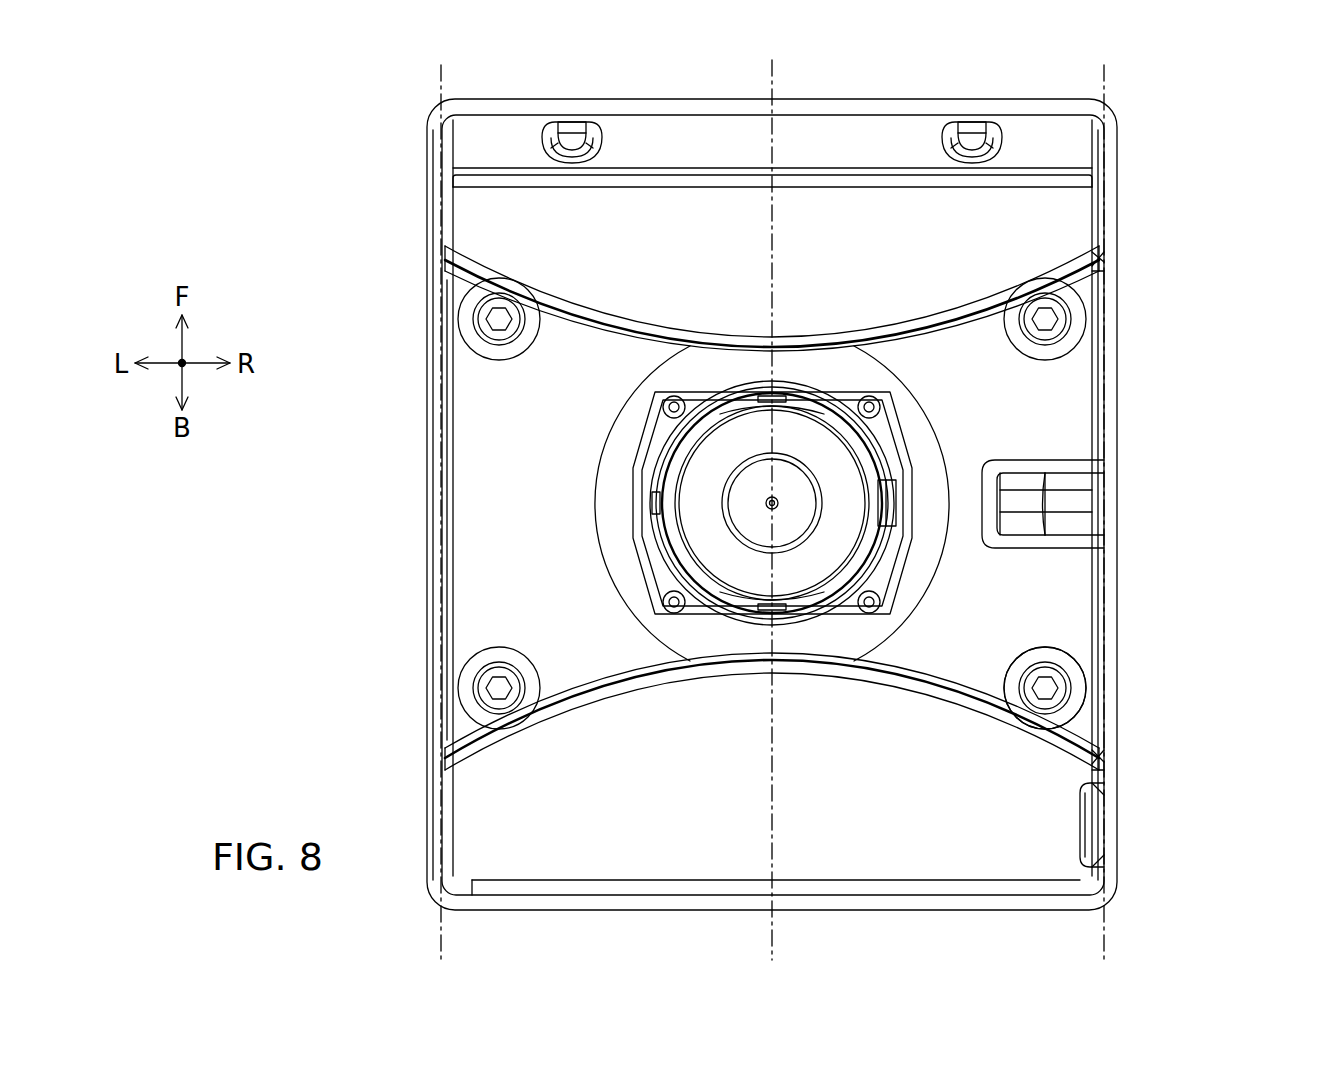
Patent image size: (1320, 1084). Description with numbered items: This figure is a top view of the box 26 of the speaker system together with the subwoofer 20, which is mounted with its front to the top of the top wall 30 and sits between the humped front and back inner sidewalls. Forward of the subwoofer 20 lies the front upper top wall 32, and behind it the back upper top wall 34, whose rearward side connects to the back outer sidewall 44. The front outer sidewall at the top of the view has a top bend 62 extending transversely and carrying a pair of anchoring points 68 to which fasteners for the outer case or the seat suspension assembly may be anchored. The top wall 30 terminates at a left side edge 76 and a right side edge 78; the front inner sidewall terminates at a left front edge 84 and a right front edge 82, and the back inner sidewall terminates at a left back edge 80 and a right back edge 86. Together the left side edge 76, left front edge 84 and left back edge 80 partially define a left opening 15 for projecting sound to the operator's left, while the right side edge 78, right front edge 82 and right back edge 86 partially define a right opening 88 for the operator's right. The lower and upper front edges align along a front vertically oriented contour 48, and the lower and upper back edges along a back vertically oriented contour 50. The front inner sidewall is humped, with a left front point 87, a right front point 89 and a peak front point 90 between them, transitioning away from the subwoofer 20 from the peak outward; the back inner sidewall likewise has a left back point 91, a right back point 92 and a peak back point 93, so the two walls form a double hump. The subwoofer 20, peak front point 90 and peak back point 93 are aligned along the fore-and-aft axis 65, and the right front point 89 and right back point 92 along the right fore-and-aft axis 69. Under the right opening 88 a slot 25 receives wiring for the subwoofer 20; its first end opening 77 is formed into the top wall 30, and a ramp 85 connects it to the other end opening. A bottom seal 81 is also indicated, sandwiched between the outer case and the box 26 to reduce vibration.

The left opening 15 is at (398, 547).
The subwoofer 20 is at (391, 505).
The slot 25 is at (1130, 490).
The box 26 is at (1140, 116).
The top wall 30 is at (534, 572).
The front upper top wall 32 is at (869, 254).
The back upper top wall 34 is at (889, 790).
The back outer sidewall 44 is at (620, 910).
The front vertically oriented contour 48 is at (1082, 280).
The back vertically oriented contour 50 is at (1080, 724).
The top bend 62 is at (488, 133).
The fore-and-aft axis 65 is at (772, 940).
The anchoring points 68 is at (568, 126).
The right fore-and-aft axis 69 is at (441, 940).
The left side edge 76 is at (447, 645).
The first end opening 77 is at (1035, 460).
The right side edge 78 is at (1100, 600).
The left back edge 80 is at (446, 760).
The bottom seal 81 is at (1108, 833).
The right front edge 82 is at (1100, 258).
The left front edge 84 is at (446, 257).
The ramp 85 is at (1062, 505).
The right back edge 86 is at (1105, 762).
The left front point 87 is at (446, 270).
The right opening 88 is at (1145, 547).
The right front point 89 is at (1105, 270).
The peak front point 90 is at (772, 346).
The left back point 91 is at (446, 746).
The right back point 92 is at (1105, 748).
The peak back point 93 is at (772, 660).